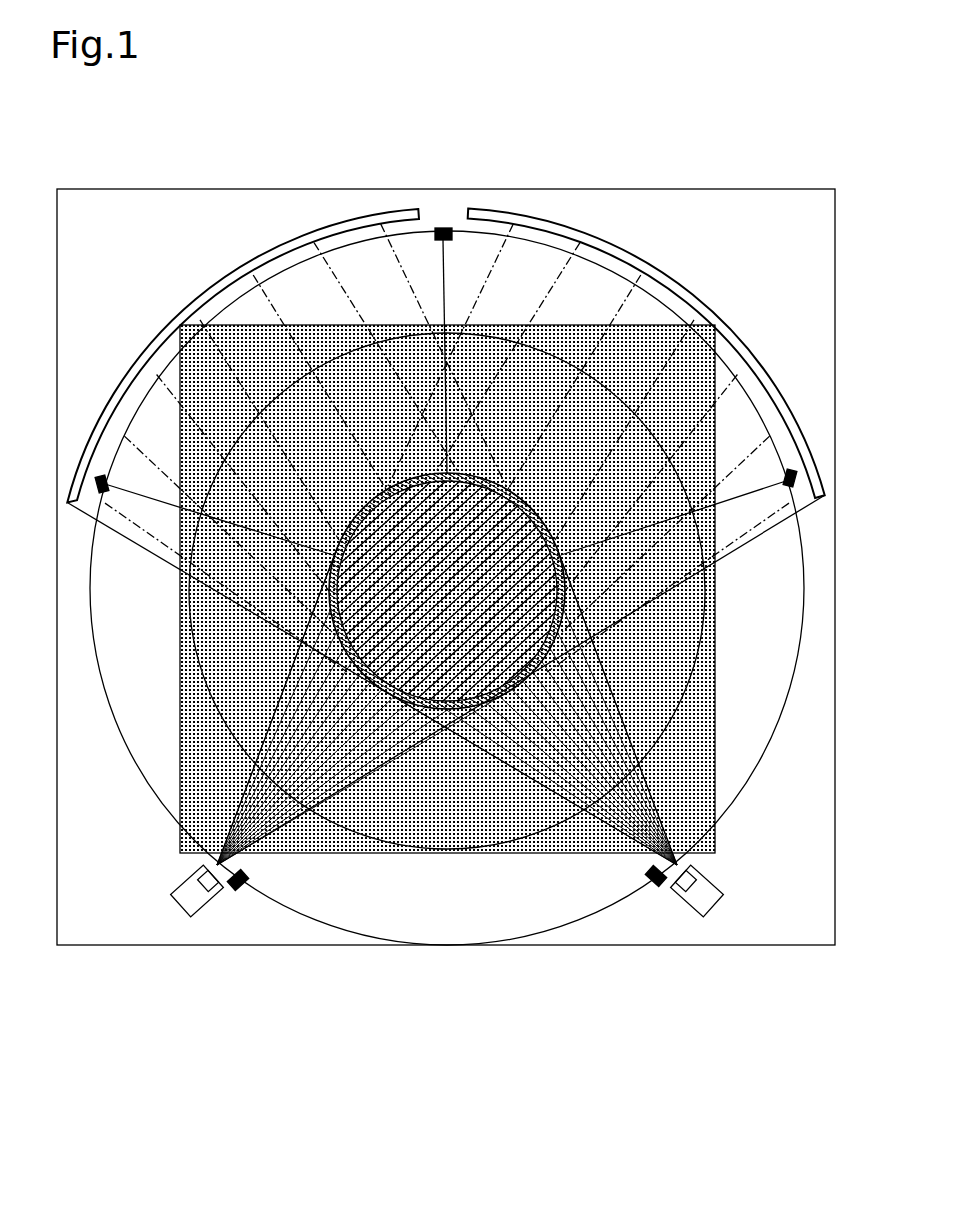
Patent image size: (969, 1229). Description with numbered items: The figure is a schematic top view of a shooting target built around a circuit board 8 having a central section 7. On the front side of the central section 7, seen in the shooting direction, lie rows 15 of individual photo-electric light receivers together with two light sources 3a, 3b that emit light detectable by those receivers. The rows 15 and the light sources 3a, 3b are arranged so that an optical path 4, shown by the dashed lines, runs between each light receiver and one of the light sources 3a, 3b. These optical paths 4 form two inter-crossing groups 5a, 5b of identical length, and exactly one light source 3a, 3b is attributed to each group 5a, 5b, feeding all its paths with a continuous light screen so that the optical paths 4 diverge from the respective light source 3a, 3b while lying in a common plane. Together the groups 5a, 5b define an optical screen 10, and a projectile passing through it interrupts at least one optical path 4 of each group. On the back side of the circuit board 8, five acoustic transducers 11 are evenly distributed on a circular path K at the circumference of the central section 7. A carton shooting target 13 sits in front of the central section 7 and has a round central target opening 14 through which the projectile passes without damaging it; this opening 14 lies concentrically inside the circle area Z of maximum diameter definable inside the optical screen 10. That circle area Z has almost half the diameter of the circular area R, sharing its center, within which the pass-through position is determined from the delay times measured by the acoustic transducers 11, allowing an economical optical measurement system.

The light source 3a is at (190, 905).
The light source 3b is at (703, 905).
The optical path 4 is at (147, 438).
The group of optical paths 5a is at (303, 830).
The group of optical paths 5b is at (512, 779).
The central section 7 is at (516, 862).
The circuit board 8 is at (232, 212).
The optical screen 10 is at (572, 633).
The acoustic transducer 11 is at (100, 476).
The shooting target 13 is at (208, 790).
The target opening 14 is at (414, 483).
The row of light receivers 15 is at (495, 214).
The circular path K is at (744, 802).
The circular area R is at (568, 356).
The circle area Z is at (479, 474).